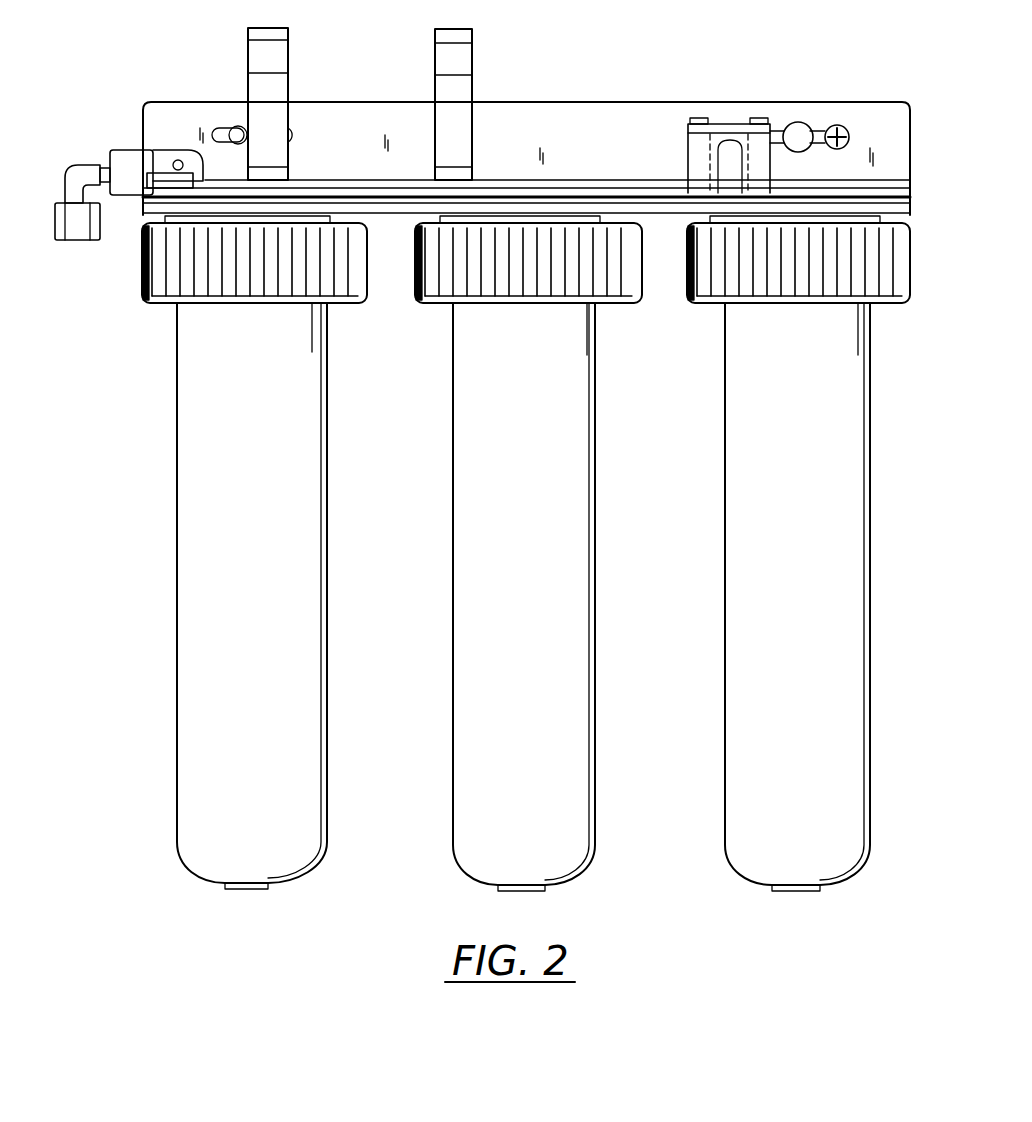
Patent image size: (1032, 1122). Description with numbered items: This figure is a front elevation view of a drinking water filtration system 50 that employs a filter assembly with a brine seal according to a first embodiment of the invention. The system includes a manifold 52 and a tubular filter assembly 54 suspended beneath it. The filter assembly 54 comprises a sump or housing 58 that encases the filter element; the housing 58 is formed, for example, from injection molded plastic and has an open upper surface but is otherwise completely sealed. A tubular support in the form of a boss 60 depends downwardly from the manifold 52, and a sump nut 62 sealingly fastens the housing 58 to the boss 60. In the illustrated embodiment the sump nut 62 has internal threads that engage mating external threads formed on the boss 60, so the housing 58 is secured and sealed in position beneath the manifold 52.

The water filtration system 50 is at (652, 90).
The manifold 52 is at (787, 103).
The filter assembly 54 is at (598, 561).
The housing 58 is at (595, 748).
The boss 60 is at (585, 222).
The sump nut 62 is at (622, 305).